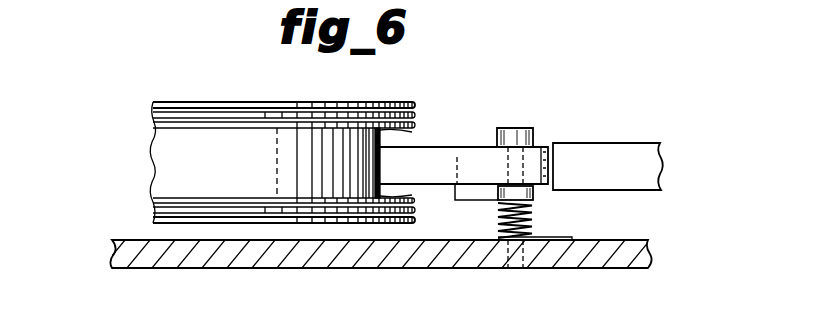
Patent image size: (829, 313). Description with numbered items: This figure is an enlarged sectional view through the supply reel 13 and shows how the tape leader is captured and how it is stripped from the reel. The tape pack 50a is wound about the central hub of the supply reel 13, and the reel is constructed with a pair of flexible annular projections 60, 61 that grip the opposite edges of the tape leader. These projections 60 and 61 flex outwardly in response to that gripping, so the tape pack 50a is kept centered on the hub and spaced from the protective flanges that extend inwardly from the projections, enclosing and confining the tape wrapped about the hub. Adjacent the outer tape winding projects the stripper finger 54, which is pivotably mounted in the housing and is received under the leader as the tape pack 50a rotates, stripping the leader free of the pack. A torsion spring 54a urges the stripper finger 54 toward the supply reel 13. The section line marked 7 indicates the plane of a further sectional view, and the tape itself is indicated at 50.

The section line 7- 7 is at (127, 88).
The supply reel 13 is at (190, 103).
The tape pack 50a is at (246, 175).
The flexible annular projection 60 is at (412, 131).
The flexible annular projection 61 is at (412, 196).
The stripper finger 54 is at (445, 157).
The torsion spring 54a is at (531, 219).
The cable 50 is at (605, 158).